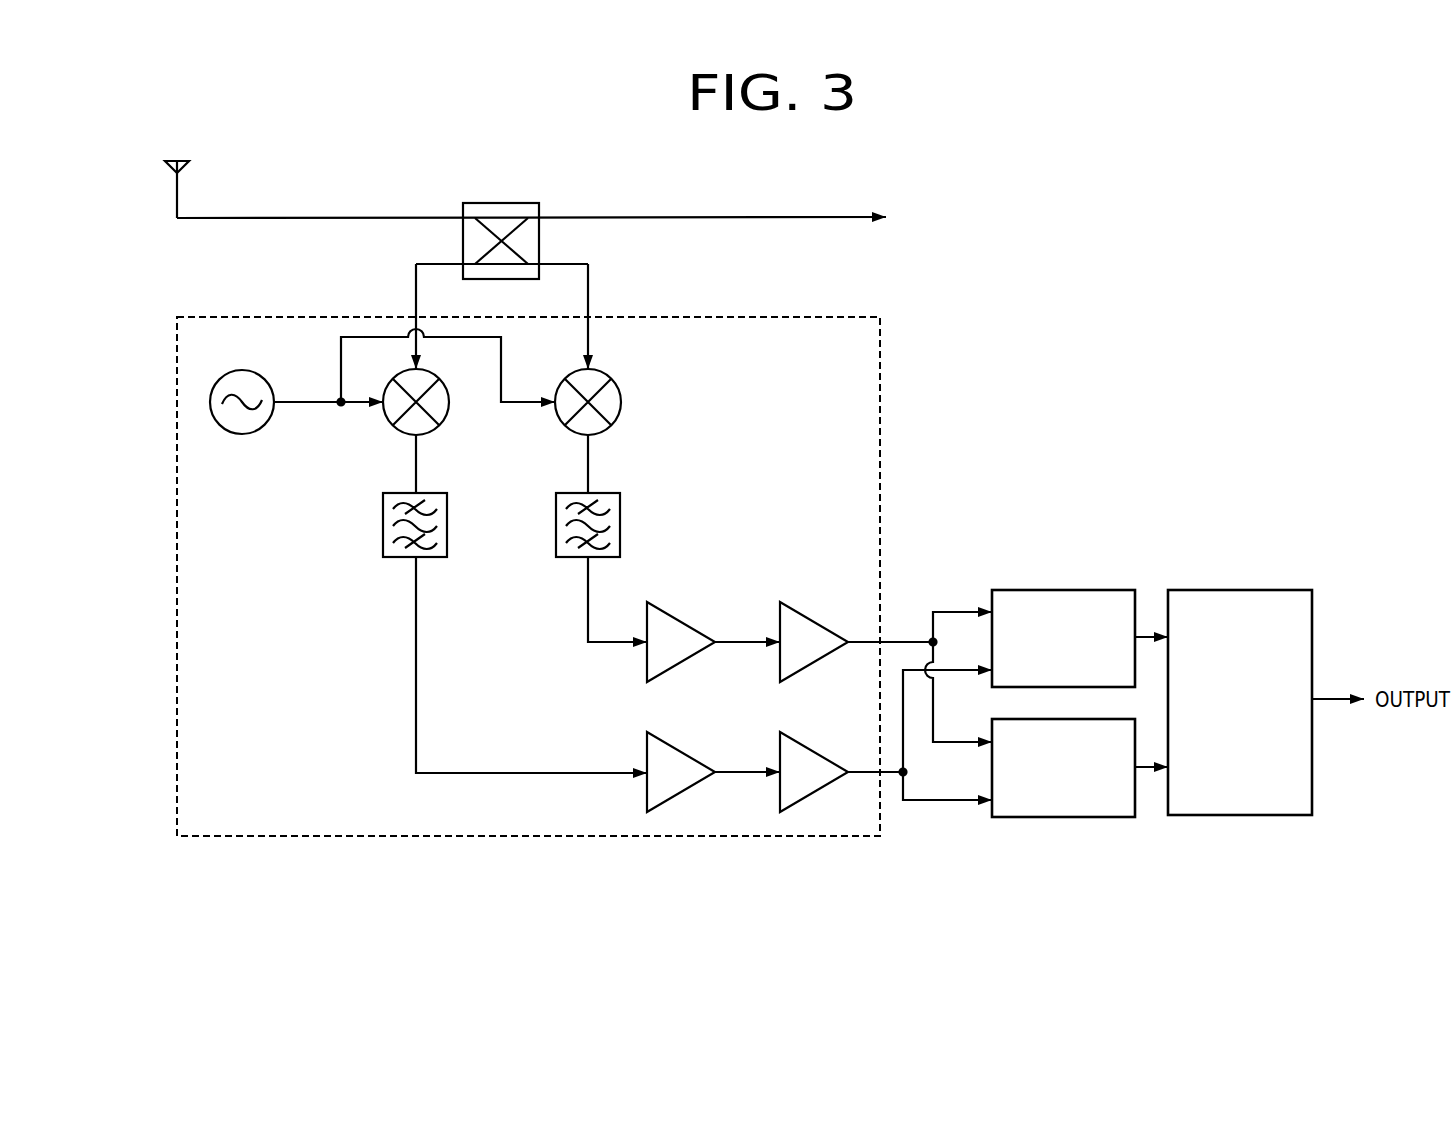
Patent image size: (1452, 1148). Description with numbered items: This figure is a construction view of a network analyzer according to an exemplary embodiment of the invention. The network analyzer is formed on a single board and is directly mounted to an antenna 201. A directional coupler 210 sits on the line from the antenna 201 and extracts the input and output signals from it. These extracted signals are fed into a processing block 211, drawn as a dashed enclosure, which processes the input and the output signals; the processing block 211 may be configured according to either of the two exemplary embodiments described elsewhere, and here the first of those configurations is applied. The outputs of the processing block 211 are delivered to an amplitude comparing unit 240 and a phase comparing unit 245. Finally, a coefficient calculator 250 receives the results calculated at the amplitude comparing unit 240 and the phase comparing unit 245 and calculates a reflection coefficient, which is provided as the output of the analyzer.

The antenna 201 is at (177, 203).
The directional coupler 210 is at (503, 203).
The processing block 211 is at (296, 838).
The amplitude comparing unit 240 is at (1050, 590).
The phase comparing unit 245 is at (1052, 817).
The coefficient calculator 250 is at (1270, 815).